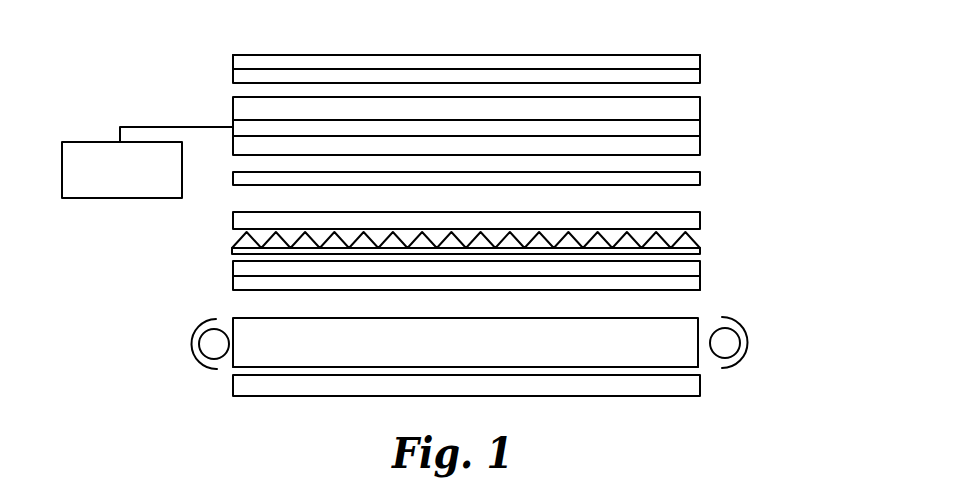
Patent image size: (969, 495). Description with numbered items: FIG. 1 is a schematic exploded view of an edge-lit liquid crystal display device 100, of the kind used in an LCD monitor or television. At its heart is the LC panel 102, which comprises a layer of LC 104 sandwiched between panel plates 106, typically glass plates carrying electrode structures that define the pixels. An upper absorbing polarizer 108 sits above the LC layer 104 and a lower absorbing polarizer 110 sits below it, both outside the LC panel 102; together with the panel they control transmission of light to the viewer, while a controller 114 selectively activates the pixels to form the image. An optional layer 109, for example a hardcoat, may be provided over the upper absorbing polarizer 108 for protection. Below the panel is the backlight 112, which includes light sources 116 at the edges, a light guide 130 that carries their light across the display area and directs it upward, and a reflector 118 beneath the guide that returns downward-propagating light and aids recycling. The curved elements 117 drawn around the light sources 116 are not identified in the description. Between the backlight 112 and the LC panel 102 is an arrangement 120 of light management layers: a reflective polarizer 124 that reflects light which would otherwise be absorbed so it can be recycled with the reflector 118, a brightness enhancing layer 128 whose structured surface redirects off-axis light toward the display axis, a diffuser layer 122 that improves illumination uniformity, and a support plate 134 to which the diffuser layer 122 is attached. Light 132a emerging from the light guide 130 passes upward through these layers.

The display device 100 is at (155, 63).
The LC panel 102 is at (712, 98).
The LC layer 104 is at (233, 124).
The panel plates 106 is at (233, 102).
The upper absorbing polarizer 108 is at (700, 78).
The optional layer 109 is at (673, 54).
The lower absorbing polarizer 110 is at (700, 180).
The backlight 112 is at (805, 317).
The controller 114 is at (120, 198).
The light sources 116 is at (200, 357).
The reflectors 117 is at (192, 337).
The reflector 118 is at (272, 396).
The arrangement of light management layers 120 is at (707, 217).
The diffuser layer 122 is at (233, 273).
The reflective polarizer 124 is at (233, 222).
The brightness enhancing layer 128 is at (233, 247).
The light guide 130 is at (234, 368).
The light 132a is at (687, 306).
The support plate 134 is at (233, 282).